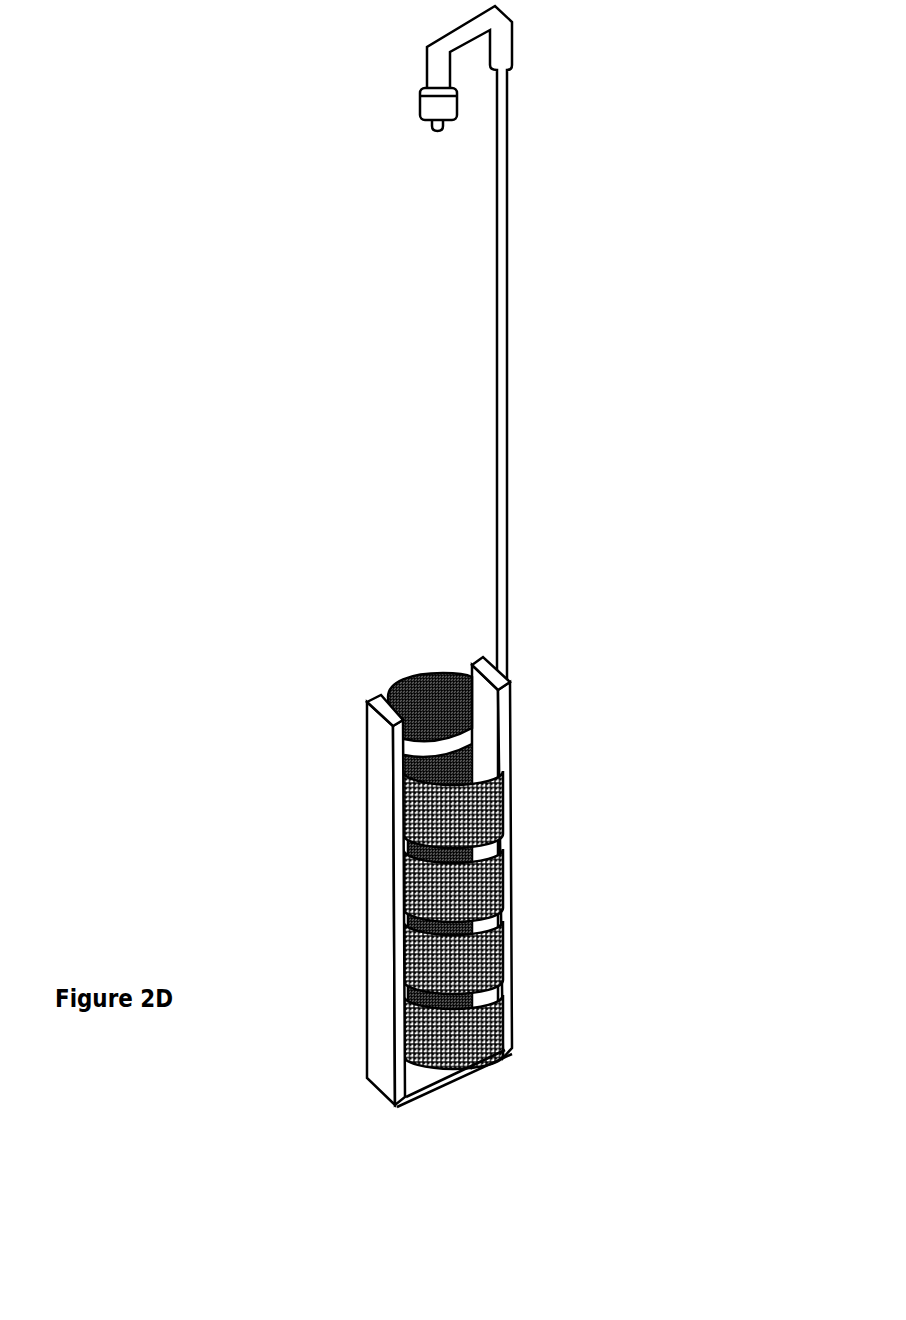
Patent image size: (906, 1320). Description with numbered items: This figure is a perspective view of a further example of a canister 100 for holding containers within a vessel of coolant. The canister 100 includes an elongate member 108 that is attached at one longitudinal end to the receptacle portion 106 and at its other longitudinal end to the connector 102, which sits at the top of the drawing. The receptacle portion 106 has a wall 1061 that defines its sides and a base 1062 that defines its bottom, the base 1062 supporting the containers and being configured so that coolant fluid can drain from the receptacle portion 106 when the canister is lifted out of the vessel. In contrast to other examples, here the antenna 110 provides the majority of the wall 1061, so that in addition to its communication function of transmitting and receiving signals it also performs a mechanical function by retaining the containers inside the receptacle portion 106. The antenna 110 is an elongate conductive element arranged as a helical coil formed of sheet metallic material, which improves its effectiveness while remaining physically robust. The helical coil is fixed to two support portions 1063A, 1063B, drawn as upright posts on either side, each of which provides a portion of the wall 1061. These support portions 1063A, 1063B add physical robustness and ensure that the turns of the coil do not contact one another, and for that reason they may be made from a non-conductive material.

The canister 100 is at (218, 473).
The connector 102 is at (433, 108).
The elongate member 108 is at (509, 334).
The receptacle portion 106 is at (353, 1133).
The support portion 1063A is at (507, 713).
The support portion 1063B is at (385, 1067).
The base 1062 is at (443, 1085).
The antenna 110 is at (564, 871).
The wall 1061 is at (488, 812).